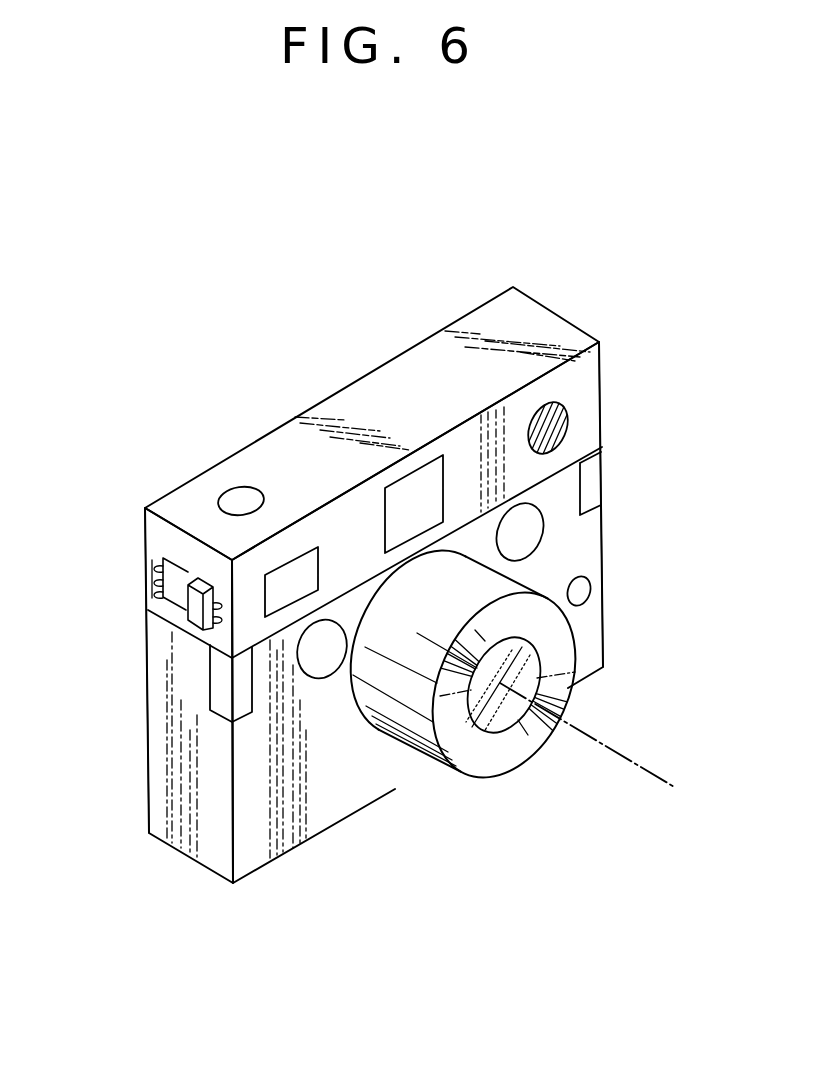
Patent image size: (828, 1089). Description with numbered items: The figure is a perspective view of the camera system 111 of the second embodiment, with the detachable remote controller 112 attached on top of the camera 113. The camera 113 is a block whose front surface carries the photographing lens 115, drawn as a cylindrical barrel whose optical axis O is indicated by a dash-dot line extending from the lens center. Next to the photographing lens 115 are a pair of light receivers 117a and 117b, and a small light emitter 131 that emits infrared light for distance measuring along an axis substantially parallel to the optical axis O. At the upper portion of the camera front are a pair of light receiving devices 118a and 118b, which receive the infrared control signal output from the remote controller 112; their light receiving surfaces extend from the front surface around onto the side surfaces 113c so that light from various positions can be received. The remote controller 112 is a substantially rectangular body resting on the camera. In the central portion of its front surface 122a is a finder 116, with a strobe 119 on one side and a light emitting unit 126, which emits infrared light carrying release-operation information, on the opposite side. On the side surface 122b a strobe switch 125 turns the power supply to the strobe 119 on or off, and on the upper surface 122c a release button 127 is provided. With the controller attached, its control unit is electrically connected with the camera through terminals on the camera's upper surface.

The camera system 111 is at (523, 268).
The remote controller 112 is at (533, 330).
The camera 113 is at (578, 562).
The side surface of camera 113c is at (207, 837).
The photographing lens 115 is at (408, 748).
The finder 116 is at (410, 491).
The light receiver 117a is at (327, 658).
The light receiver 117b is at (533, 530).
The light receiving device 118a is at (212, 692).
The light receiving device 118b is at (590, 482).
The strobe 119 is at (293, 572).
The front surface of remote controller 122a is at (587, 371).
The side surface of remote controller 122b is at (155, 529).
The upper surface of remote controller 122c is at (330, 412).
The strobe switch 125 is at (185, 618).
The light emitting unit 126 is at (566, 438).
The release button 127 is at (236, 497).
The light emitter 131 is at (588, 597).
The optical axis O is at (621, 751).